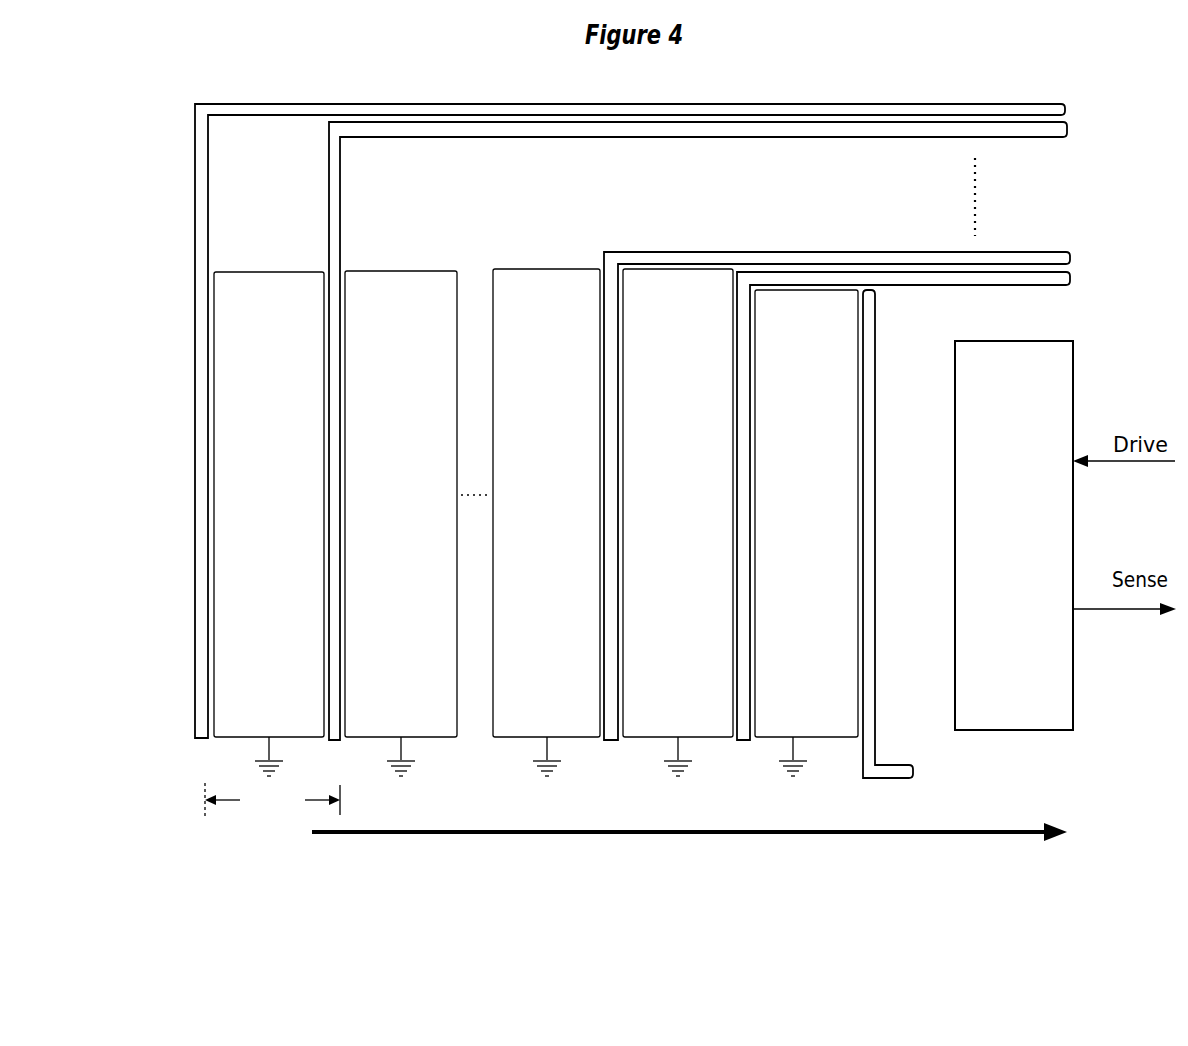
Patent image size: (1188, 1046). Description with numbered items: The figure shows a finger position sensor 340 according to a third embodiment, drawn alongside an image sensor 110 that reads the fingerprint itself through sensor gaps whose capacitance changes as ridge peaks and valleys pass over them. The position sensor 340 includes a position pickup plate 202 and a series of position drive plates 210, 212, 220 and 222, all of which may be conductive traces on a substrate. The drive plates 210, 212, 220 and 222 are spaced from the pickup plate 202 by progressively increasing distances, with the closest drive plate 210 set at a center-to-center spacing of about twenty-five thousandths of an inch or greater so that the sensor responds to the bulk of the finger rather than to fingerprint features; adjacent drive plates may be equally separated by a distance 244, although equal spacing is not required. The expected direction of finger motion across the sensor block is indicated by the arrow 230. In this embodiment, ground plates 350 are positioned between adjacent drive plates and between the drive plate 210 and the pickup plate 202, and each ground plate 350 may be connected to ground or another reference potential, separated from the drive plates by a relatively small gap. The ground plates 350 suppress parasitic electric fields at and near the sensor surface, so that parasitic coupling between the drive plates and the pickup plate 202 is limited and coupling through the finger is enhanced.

The position drive plate 222 is at (196, 460).
The position drive plate 220 is at (327, 460).
The ground plate 350 is at (388, 262).
The position drive plate 212 is at (604, 460).
The position drive plate 210 is at (736, 460).
The position pickup plate 202 is at (858, 460).
The image sensor 110 is at (1058, 332).
The distance between adjacent drive plates 244 is at (272, 800).
The arrow indicating expected direction of finger motion 230 is at (305, 836).
The finger position sensor 340 is at (618, 782).